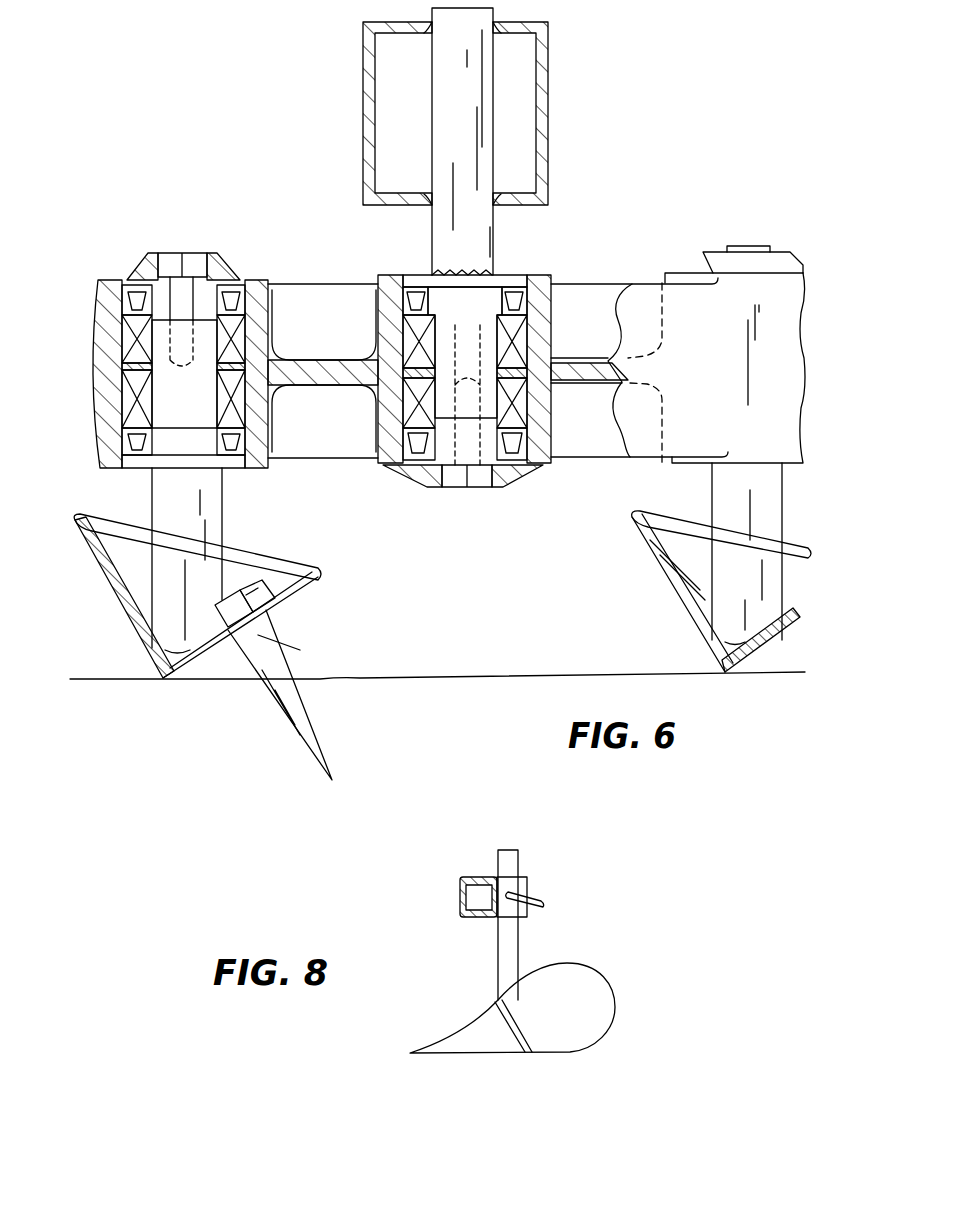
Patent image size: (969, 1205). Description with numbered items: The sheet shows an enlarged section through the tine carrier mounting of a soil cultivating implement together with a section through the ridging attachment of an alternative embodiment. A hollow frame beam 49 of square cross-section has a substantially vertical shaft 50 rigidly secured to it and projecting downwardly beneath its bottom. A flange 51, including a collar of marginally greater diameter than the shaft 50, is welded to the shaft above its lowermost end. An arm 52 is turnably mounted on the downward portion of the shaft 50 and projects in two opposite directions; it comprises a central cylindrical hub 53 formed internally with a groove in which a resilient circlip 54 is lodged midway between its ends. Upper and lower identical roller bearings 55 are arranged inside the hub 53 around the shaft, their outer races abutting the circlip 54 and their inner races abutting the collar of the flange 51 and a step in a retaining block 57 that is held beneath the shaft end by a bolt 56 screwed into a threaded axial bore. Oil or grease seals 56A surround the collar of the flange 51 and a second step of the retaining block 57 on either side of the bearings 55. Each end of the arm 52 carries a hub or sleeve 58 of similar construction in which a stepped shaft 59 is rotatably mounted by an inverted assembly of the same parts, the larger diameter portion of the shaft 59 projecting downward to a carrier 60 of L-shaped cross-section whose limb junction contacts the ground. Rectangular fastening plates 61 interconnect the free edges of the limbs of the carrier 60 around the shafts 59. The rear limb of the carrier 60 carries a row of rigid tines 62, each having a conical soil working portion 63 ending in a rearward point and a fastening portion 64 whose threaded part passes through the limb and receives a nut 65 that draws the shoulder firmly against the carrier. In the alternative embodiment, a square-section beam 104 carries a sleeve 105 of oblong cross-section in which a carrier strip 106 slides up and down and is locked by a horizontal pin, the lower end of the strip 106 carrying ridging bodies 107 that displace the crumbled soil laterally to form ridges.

In FIG. 6, the hollow frame beam 49 is at (367, 60).
In FIG. 6, the shaft 50 is at (437, 225).
In FIG. 6, the flange 51 is at (505, 274).
In FIG. 6, the arm 52 is at (638, 291).
In FIG. 6, the central hub 53 is at (382, 455).
In FIG. 6, the circlip 54 is at (219, 386).
In FIG. 6, the roller bearing 55 is at (217, 405).
In FIG. 6, the bolt 56 is at (213, 237).
In FIG. 6, the oil or grease seal 56A is at (248, 298).
In FIG. 6, the retaining block 57 is at (220, 262).
In FIG. 6, the hub or sleeve 58 is at (96, 287).
In FIG. 6, the shaft 59 is at (187, 507).
In FIG. 6, the carrier 60 is at (135, 617).
In FIG. 6, the fastening plate 61 is at (318, 568).
In FIG. 6, the tine 62 is at (295, 661).
In FIG. 6, the soil working portion 63 is at (278, 712).
In FIG. 6, the fastening portion 64 is at (217, 593).
In FIG. 6, the nut 65 is at (290, 598).
In FIG. 8, the beam 104 is at (468, 877).
In FIG. 8, the sleeve 105 is at (515, 887).
In FIG. 8, the carrier strip 106 is at (517, 852).
In FIG. 8, the ridging body 107 is at (568, 988).